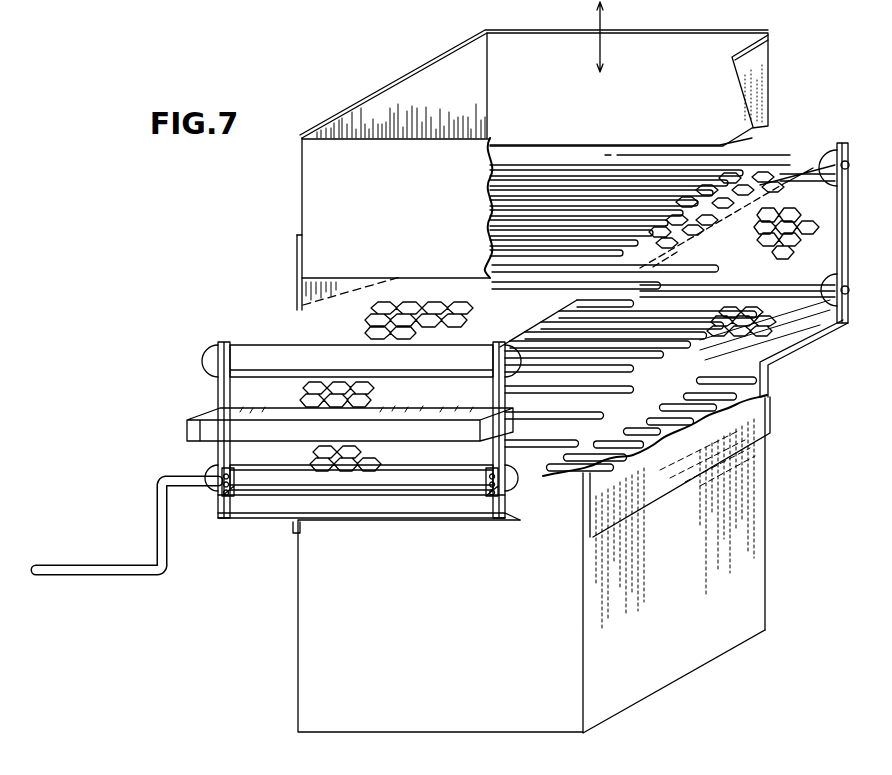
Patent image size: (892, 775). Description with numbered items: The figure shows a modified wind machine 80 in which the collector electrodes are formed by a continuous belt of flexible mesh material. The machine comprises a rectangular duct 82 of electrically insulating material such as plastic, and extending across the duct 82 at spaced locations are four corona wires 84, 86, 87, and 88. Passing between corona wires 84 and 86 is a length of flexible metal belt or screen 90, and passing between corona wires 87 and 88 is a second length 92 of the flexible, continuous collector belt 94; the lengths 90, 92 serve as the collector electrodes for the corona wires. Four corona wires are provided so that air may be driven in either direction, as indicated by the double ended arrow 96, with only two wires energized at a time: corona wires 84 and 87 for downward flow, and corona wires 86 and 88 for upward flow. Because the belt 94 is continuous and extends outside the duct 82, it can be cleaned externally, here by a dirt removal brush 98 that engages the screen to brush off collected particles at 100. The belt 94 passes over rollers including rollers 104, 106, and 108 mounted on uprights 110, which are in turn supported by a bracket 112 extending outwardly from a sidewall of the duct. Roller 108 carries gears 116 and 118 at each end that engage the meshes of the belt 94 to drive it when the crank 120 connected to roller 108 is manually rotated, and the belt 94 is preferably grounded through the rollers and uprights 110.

The wind machine 80 is at (182, 212).
The rectangular duct 82 is at (312, 632).
The corona wire 84 is at (651, 175).
The corona wire 86 is at (620, 287).
The corona wire 87 is at (620, 397).
The corona wire 88 is at (697, 422).
The length of flexible metal belt 90 is at (786, 168).
The second length of flexible metal belt 92 is at (770, 362).
The collector belt 94 is at (804, 334).
The double ended arrow 96 is at (608, 26).
The dirt removal brush 98 is at (197, 433).
The collected particles 100 is at (268, 410).
The roller 104 is at (818, 161).
The roller 106 is at (263, 355).
The roller 108 is at (350, 493).
The uprights 110 is at (792, 228).
The bracket 112 is at (413, 507).
The gear 116 is at (262, 512).
The gear 118 is at (482, 497).
The crank 120 is at (751, 276).